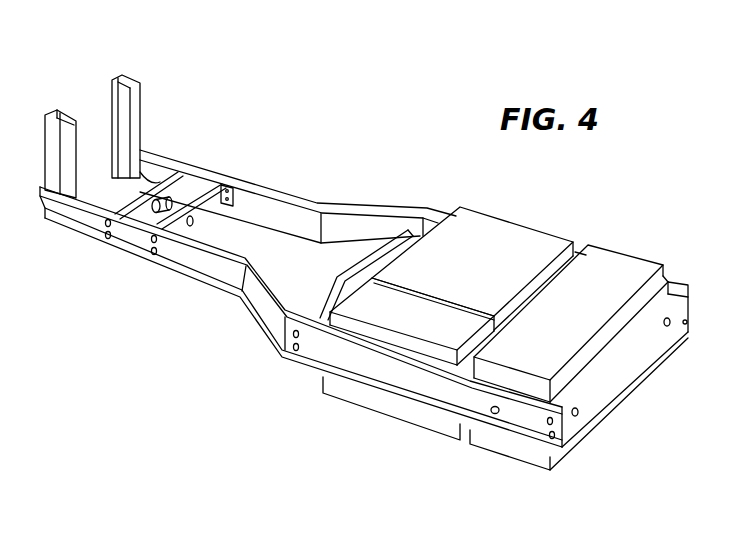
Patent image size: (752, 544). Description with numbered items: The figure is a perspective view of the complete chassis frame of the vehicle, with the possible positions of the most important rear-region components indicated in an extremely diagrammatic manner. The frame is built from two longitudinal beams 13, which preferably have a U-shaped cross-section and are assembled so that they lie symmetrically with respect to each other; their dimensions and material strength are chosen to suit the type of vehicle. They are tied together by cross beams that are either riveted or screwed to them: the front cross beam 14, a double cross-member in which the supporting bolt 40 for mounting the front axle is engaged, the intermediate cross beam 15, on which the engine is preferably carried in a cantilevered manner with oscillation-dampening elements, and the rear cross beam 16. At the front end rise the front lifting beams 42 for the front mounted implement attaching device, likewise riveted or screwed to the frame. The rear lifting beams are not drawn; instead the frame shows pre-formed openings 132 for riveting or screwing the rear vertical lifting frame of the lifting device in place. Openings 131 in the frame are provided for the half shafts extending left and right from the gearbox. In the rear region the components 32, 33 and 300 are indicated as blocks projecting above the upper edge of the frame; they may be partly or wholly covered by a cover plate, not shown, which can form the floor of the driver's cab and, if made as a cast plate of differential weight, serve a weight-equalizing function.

The longitudinal beams 13 is at (281, 173).
The front cross beam 14 is at (212, 206).
The intermediate cross beam 15 is at (340, 278).
The rear cross beam 16 is at (676, 330).
The component 32 is at (492, 273).
The component 33 is at (418, 327).
The component 300 is at (588, 320).
The bolt 40 is at (166, 205).
The front lifting beams 42 is at (112, 88).
The openings 131 is at (494, 414).
The openings 132 is at (668, 327).